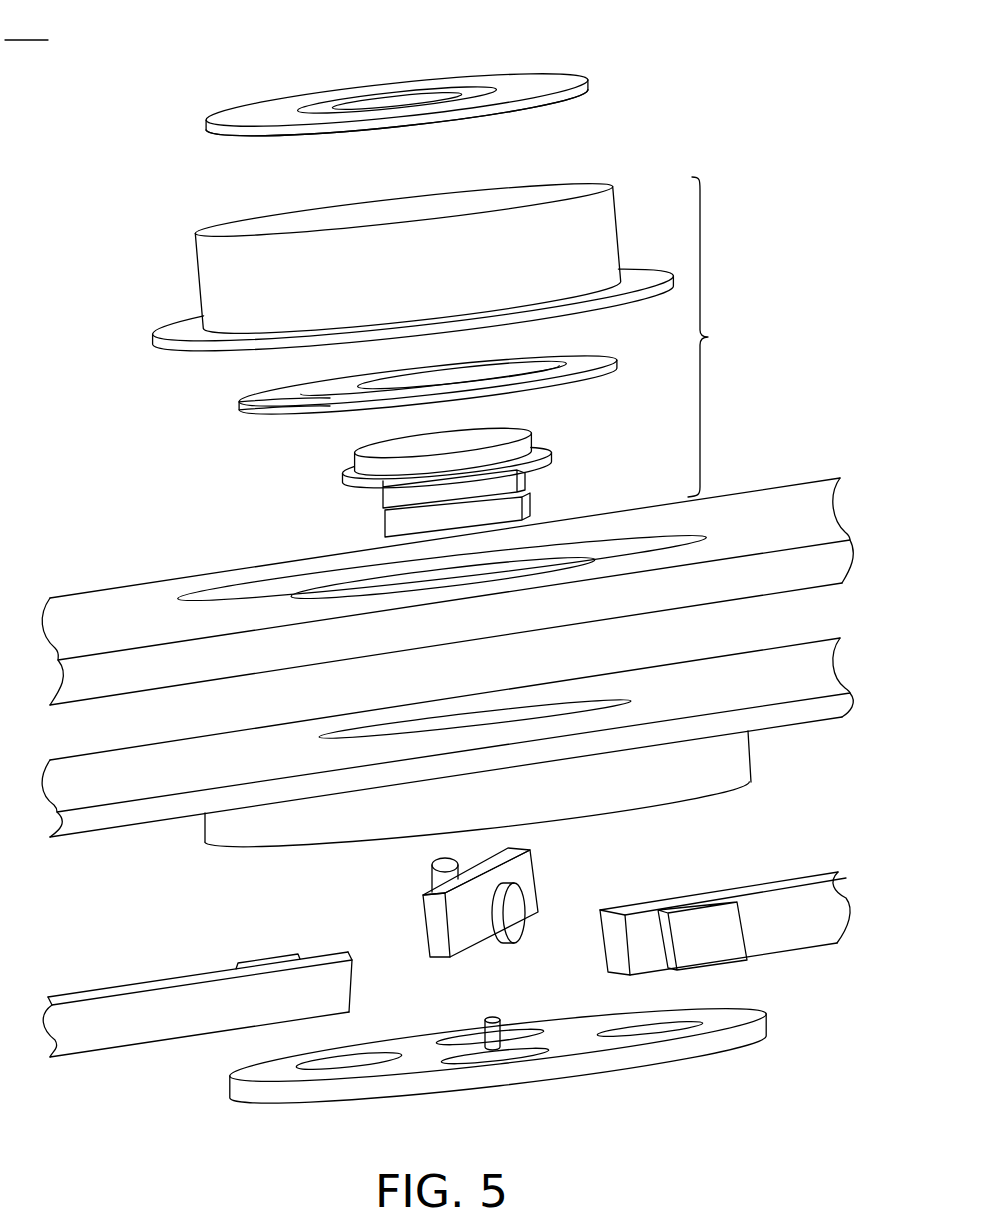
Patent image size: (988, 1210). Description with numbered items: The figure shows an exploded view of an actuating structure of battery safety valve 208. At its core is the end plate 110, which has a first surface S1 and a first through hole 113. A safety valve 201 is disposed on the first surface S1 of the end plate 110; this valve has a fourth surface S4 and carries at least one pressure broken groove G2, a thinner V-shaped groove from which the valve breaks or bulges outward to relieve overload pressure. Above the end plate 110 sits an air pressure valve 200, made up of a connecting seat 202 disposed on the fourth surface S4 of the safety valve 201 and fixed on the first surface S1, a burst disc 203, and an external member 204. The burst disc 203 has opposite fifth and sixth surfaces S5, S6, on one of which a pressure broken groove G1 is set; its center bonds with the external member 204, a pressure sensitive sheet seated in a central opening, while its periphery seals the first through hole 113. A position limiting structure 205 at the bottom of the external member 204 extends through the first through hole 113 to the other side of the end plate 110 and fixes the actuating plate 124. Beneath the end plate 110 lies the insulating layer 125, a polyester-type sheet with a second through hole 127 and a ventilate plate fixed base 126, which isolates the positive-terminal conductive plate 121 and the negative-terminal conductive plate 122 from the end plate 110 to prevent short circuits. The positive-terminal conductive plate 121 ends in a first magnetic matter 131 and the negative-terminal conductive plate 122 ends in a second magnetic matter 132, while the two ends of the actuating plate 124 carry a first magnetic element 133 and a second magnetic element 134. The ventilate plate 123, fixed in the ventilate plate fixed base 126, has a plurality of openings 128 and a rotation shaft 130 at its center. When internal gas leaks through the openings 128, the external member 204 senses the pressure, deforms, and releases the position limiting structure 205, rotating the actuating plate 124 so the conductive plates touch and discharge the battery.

The actuating structure of battery safety valve 208 is at (26, 24).
The air pressure valve 200 is at (722, 337).
The safety valve 201 is at (406, 96).
The pressure broken groove G2 is at (352, 98).
The fourth surface S4 is at (248, 144).
The connecting seat 202 is at (406, 206).
The burst disc 203 is at (572, 370).
The pressure broken groove G1 is at (325, 383).
The fifth surface S5 is at (270, 386).
The sixth surface S6 is at (268, 421).
The external member 204 is at (545, 437).
The position limiting structure 205 is at (382, 522).
The end plate 110 is at (152, 592).
The first surface S1 is at (252, 590).
The first through hole 113 is at (558, 560).
The insulating layer 125 is at (164, 805).
The second through hole 127 is at (462, 716).
The ventilate plate fixed base 126 is at (345, 817).
The negative-terminal conductive plate 122 is at (178, 1003).
The second magnetic matter 132 is at (257, 955).
The actuating plate 124 is at (525, 875).
The first magnetic element 133 is at (432, 880).
The second magnetic element 134 is at (520, 930).
The rotation shaft 130 is at (492, 1017).
The positive-terminal conductive plate 121 is at (775, 925).
The first magnetic matter 131 is at (700, 940).
The ventilate plate 123 is at (490, 1075).
The openings 128 is at (350, 1068).